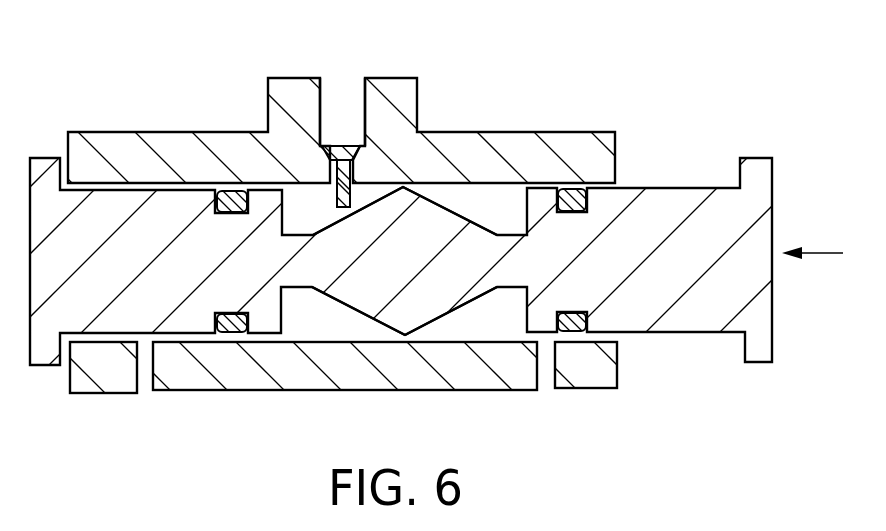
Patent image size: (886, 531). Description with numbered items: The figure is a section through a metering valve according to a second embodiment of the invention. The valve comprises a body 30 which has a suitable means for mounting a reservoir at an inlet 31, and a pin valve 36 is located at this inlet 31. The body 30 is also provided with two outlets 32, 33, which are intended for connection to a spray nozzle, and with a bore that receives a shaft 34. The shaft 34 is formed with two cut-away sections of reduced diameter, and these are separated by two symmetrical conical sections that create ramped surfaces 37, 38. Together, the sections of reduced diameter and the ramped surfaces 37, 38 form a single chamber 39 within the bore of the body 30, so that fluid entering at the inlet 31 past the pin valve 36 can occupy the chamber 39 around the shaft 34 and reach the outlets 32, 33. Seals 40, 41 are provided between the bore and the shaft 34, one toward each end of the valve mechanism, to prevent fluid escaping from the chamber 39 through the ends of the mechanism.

The body 30 is at (543, 132).
The inlet 31 is at (350, 105).
The outlet 32 is at (143, 380).
The outlet 33 is at (547, 380).
The shaft 34 is at (682, 188).
The pin valve 36 is at (325, 148).
The ramped surface 37 is at (358, 312).
The ramped surface 38 is at (453, 307).
The chamber 39 is at (443, 207).
The seal 40 is at (236, 345).
The seal 41 is at (580, 337).